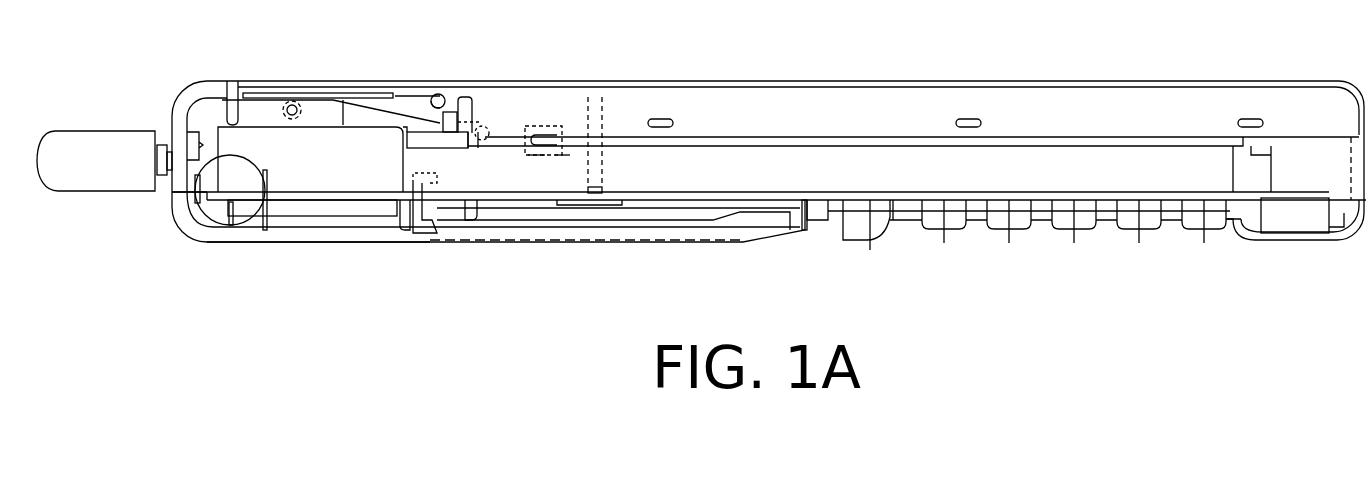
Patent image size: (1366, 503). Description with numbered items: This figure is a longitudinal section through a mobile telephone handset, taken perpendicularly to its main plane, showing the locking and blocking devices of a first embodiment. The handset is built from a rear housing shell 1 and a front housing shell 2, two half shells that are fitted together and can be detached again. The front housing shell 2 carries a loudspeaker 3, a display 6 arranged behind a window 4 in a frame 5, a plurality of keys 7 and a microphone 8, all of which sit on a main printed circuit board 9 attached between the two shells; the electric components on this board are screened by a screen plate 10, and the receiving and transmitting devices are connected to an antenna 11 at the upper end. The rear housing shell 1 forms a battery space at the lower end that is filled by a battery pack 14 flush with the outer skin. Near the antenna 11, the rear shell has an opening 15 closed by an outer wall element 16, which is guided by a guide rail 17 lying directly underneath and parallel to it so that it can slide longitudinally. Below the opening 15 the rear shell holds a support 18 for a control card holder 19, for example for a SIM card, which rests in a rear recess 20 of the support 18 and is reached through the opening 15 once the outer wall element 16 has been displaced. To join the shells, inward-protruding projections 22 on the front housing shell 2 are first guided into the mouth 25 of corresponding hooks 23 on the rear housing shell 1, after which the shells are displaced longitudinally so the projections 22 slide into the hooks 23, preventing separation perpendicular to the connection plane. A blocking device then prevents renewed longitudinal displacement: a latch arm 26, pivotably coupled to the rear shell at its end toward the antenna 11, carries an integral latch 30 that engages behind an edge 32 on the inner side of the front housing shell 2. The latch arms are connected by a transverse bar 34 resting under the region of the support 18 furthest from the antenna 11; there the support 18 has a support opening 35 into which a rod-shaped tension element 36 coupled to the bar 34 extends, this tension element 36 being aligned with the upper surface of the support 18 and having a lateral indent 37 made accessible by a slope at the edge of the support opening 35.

The rear housing shell 1 is at (182, 107).
The front housing shell 2 is at (173, 229).
The loudspeaker 3 is at (330, 220).
The window 4 is at (630, 240).
The frame 5 is at (475, 218).
The display 6 is at (657, 220).
The keys 7 is at (857, 217).
The microphone 8 is at (1313, 218).
The main printed circuit board 9 is at (1085, 198).
The screen plate 10 is at (1078, 142).
The antenna 11 is at (58, 140).
The battery pack 14 is at (1010, 85).
The opening 15 is at (232, 85).
The outer wall element 16 is at (275, 92).
The guide rail 17 is at (326, 80).
The support 18 is at (225, 103).
The control card holder 19 is at (343, 100).
The rear recess 20 is at (250, 100).
The projections 22 is at (552, 143).
The hooks 23 is at (535, 158).
The mouth 25 is at (568, 155).
The latch arm 26 is at (385, 112).
The latch 30 is at (478, 147).
The edge 32 is at (477, 142).
The bar 34 is at (450, 132).
The support opening 35 is at (440, 108).
The tension element 36 is at (458, 117).
The lateral indent 37 is at (437, 100).